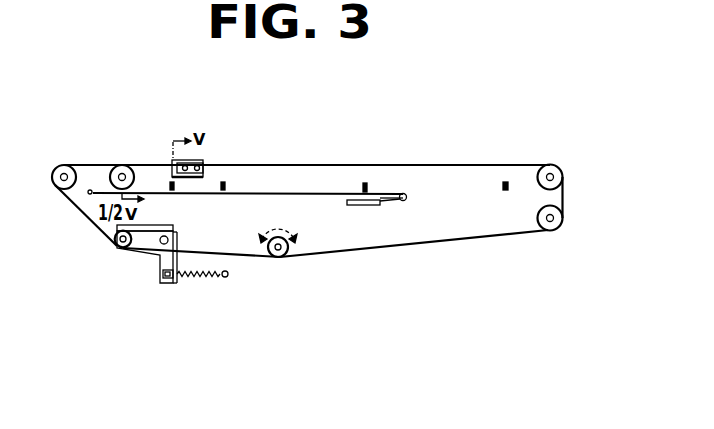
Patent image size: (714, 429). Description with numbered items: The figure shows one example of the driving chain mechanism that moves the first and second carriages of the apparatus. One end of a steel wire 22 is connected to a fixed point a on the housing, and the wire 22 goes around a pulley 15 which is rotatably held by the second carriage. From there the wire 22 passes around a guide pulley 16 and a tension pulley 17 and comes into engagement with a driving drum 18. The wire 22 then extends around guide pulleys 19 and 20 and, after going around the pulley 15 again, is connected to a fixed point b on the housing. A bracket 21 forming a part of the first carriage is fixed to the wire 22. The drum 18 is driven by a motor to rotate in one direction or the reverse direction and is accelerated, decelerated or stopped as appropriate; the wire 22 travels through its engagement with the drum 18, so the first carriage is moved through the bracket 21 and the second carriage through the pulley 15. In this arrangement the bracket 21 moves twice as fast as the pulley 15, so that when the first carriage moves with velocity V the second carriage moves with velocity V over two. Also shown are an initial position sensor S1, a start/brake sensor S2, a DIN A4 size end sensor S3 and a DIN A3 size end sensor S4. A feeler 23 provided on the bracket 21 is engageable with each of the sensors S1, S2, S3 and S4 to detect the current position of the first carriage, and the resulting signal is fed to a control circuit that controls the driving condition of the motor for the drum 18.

The pulley 15 is at (125, 165).
The guide pulley 16 is at (66, 165).
The tension pulley 17 is at (118, 249).
The driving drum 18 is at (282, 258).
The guide pulley 19 is at (550, 231).
The guide pulley 20 is at (557, 168).
The bracket 21 is at (196, 160).
The steel wire 22 is at (443, 243).
The feeler 23 is at (205, 178).
The fixed point a is at (82, 196).
The fixed point b is at (373, 214).
The initial position sensor S1 is at (173, 190).
The start/brake sensor S2 is at (223, 190).
The DIN A4 size end sensor S3 is at (366, 182).
The DIN A3 size end sensor S4 is at (506, 182).